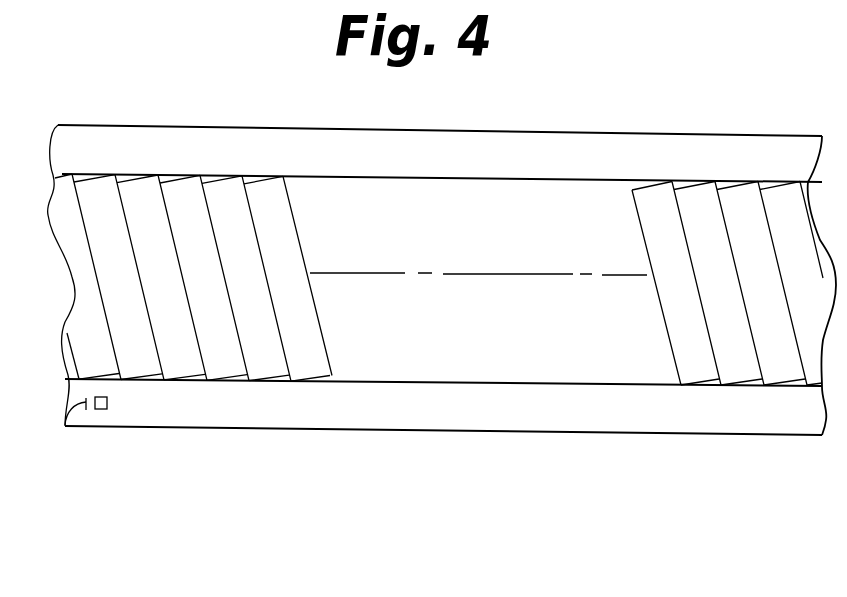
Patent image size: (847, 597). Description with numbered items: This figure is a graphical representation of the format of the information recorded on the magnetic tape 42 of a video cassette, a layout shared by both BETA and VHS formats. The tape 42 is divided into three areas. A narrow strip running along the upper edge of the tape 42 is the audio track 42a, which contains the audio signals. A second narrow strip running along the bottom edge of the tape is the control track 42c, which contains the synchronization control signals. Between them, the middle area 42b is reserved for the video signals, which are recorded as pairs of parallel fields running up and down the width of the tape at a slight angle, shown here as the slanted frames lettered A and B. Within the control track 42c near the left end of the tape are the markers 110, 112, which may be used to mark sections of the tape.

The tape 42 is at (245, 102).
The audio track 42a is at (442, 160).
The middle area 42b is at (637, 227).
The control track 42c is at (443, 403).
The marker 110 is at (66, 426).
The marker 112 is at (108, 410).